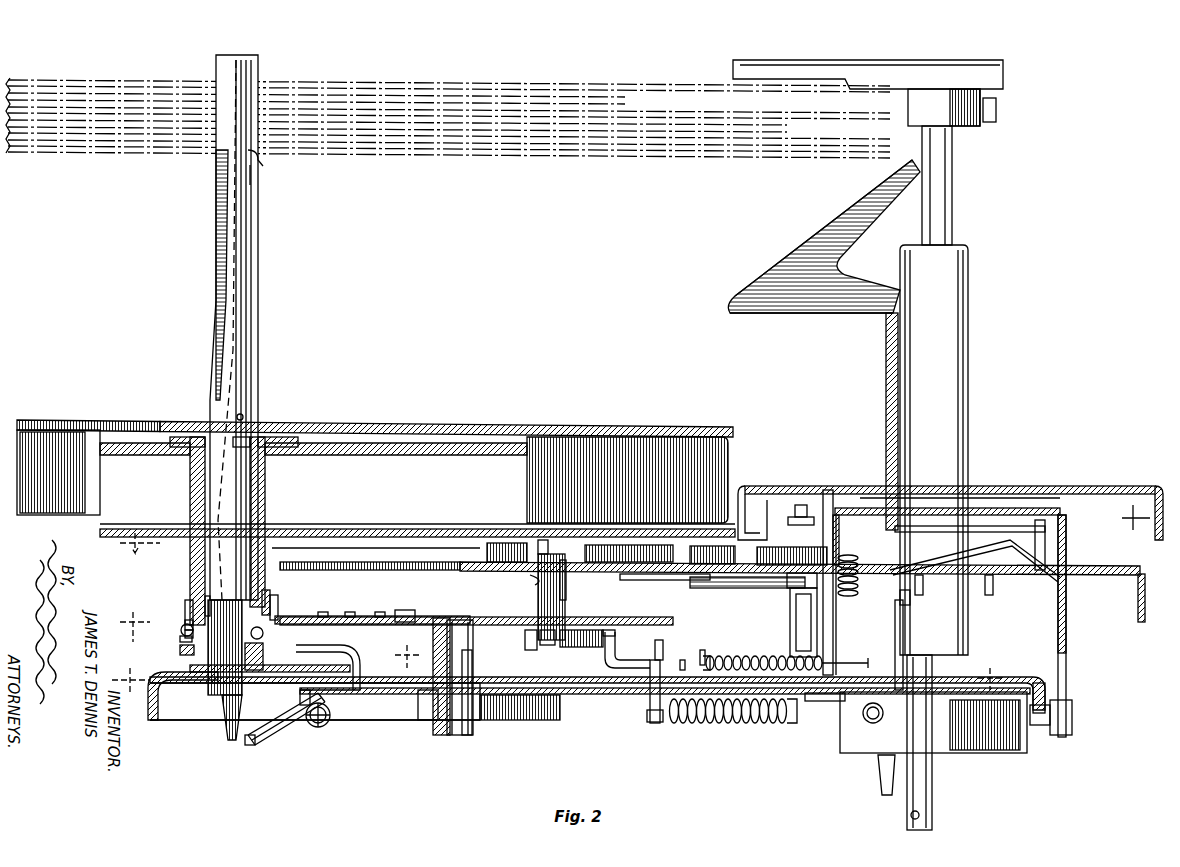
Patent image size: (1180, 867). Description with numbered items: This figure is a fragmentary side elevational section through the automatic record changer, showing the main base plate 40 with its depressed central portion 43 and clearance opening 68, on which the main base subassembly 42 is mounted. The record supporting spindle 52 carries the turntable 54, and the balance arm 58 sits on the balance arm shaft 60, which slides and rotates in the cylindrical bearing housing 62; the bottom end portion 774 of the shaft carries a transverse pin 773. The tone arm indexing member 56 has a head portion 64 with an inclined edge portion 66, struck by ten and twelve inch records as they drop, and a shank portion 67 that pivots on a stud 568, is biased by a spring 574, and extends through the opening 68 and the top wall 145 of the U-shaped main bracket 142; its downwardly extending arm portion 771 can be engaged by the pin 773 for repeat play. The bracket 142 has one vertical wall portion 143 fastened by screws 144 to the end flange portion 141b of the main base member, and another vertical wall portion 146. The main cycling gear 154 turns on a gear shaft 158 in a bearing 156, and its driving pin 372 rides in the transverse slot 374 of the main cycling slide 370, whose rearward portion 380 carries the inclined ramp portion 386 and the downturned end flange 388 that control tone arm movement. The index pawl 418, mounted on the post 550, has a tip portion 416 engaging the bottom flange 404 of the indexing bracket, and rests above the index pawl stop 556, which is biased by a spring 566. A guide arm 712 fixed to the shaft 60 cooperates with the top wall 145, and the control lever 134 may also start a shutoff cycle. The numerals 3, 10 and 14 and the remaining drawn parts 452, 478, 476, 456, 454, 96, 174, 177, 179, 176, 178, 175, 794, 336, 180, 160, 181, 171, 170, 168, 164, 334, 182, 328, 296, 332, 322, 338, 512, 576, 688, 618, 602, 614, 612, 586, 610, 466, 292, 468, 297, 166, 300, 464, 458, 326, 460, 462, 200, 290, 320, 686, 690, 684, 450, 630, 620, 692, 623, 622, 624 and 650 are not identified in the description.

The balance arm 58 is at (733, 70).
The balance arm shaft 60 is at (952, 226).
The bearing housing 62 is at (968, 345).
The tone arm indexing member 56 is at (800, 237).
The inclined edge portion 66 is at (750, 283).
The head portion 64 is at (750, 314).
The shank portion 67 is at (887, 335).
The record supporting spindle 52 is at (258, 212).
The presser blade 452 is at (216, 180).
The hook 478 is at (258, 160).
The guide 476 is at (253, 176).
The thread 456 is at (225, 385).
The pivot 454 is at (243, 412).
The turntable 54 is at (730, 428).
The table block 96 is at (732, 460).
The support plate 174 is at (315, 458).
The left flange 177 is at (198, 437).
The bushing 179 is at (252, 437).
The right flange 176 is at (285, 437).
The housing 178 is at (190, 478).
The plate 175 is at (283, 522).
The depressed central portion 43 is at (345, 528).
The main base plate 40 is at (1150, 490).
The index pawl 418 is at (750, 490).
The main bracket 142 is at (1040, 508).
The guide arm 712 is at (833, 510).
The top wall 145 is at (812, 508).
The bottom flange 404 is at (985, 525).
The clearance opening 68 is at (1065, 495).
The inclined ramp portion 386 is at (1025, 545).
The tip portion 416 is at (1046, 552).
The main cycling slide 370 is at (412, 562).
The downturned end flange 388 is at (1142, 575).
The section line 3 is at (628, 525).
The post 794 is at (536, 540).
The driving pin 372 is at (560, 545).
The rod 336 is at (273, 552).
The guide 180 is at (190, 600).
The guide 160 is at (210, 598).
The block 181 is at (188, 622).
The block 171 is at (188, 632).
The section line 10 is at (553, 651).
The roller 170 is at (181, 630).
The bearing 168 is at (183, 638).
The base block 164 is at (185, 652).
The section line 14 is at (266, 669).
The bracket 334 is at (275, 605).
The bracket 182 is at (278, 612).
The plate 328 is at (325, 613).
The plate 296 is at (350, 613).
The plate 332 is at (380, 613).
The plate 322 is at (365, 618).
The block 338 is at (410, 615).
The main cycling gear 154 is at (440, 618).
The bearing 156 is at (455, 640).
The transverse slot 374 is at (532, 582).
The post 512 is at (568, 565).
The bar 576 is at (655, 575).
The rearward portion 380 is at (785, 600).
The post 550 is at (792, 607).
The block 688 is at (582, 630).
The block 618 is at (612, 630).
The rod 602 is at (672, 645).
The pin 614 is at (703, 650).
The control lever 134 is at (684, 660).
The vertical wall portion 146 is at (775, 660).
The spring 574 is at (768, 657).
The spring 566 is at (858, 592).
The index pawl stop 556 is at (922, 585).
The block 612 is at (910, 600).
The pin 586 is at (990, 592).
The shaft 610 is at (905, 633).
The block 466 is at (265, 655).
The pipe 292 is at (348, 650).
The plate 468 is at (208, 686).
The pipe 297 is at (326, 690).
The bracket 166 is at (152, 720).
The main base subassembly 42 is at (175, 722).
The base plate 300 is at (315, 731).
The needle guide 464 is at (225, 700).
The needle 458 is at (230, 738).
The rod 326 is at (276, 720).
The rod end 460 is at (250, 745).
The block 462 is at (306, 725).
The shaft 200 is at (318, 728).
The block 290 is at (425, 720).
The gear shaft 158 is at (452, 735).
The post 320 is at (473, 725).
The block 686 is at (530, 642).
The block 690 is at (552, 645).
The block 684 is at (520, 707).
The bottom plate 450 is at (548, 690).
The plate 630 is at (593, 694).
The pipe 620 is at (628, 660).
The rod 692 is at (645, 700).
The spring end 623 is at (651, 722).
The spring 622 is at (668, 724).
The spring end 624 is at (680, 724).
The block 650 is at (806, 696).
The stud 568 is at (868, 725).
The arm portion 771 is at (880, 772).
The bottom end portion 774 is at (932, 790).
The transverse pin 773 is at (920, 815).
The vertical wall portion 143 is at (1066, 665).
The screws 144 is at (1070, 725).
The end flange portion 141b is at (1042, 735).